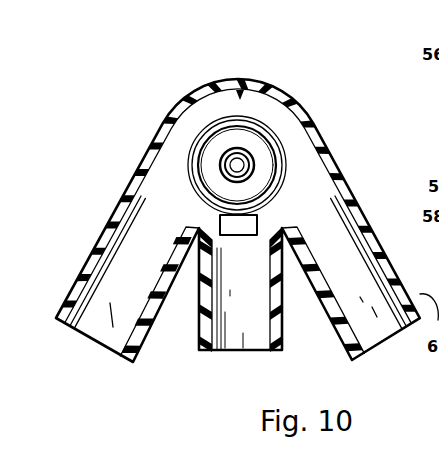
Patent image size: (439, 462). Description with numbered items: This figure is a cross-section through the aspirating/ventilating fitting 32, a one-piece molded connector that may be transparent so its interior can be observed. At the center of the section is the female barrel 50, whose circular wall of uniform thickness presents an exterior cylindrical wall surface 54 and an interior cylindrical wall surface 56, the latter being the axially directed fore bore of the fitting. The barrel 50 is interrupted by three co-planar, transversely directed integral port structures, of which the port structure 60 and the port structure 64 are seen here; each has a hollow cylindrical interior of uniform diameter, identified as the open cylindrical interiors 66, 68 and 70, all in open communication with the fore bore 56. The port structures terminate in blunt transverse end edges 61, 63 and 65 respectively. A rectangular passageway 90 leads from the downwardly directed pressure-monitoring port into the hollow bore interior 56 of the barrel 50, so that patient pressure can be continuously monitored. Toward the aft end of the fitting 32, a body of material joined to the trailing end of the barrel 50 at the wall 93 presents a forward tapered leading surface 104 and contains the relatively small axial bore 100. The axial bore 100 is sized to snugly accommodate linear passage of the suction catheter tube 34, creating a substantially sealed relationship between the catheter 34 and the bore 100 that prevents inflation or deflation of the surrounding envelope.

The aspirating/ventilating fitting 32 is at (138, 114).
The suction catheter tube 34 is at (212, 172).
The female barrel 50 is at (290, 100).
The exterior cylindrical wall surface 54 is at (216, 79).
The interior cylindrical wall surface 56 is at (240, 97).
The wall 93 is at (262, 110).
The axial bore 100 is at (252, 162).
The forward tapered leading surface 104 is at (287, 184).
The rectangular passageway 90 is at (235, 216).
The open cylindrical interior 70 is at (251, 316).
The open cylindrical interior 66 is at (135, 285).
The open cylindrical interior 68 is at (362, 286).
The port structure 60 is at (71, 288).
The blunt transverse end edge 61 is at (62, 326).
The port structure 64 is at (197, 339).
The blunt transverse end edge 65 is at (208, 355).
The blunt transverse end edge 63 is at (358, 362).